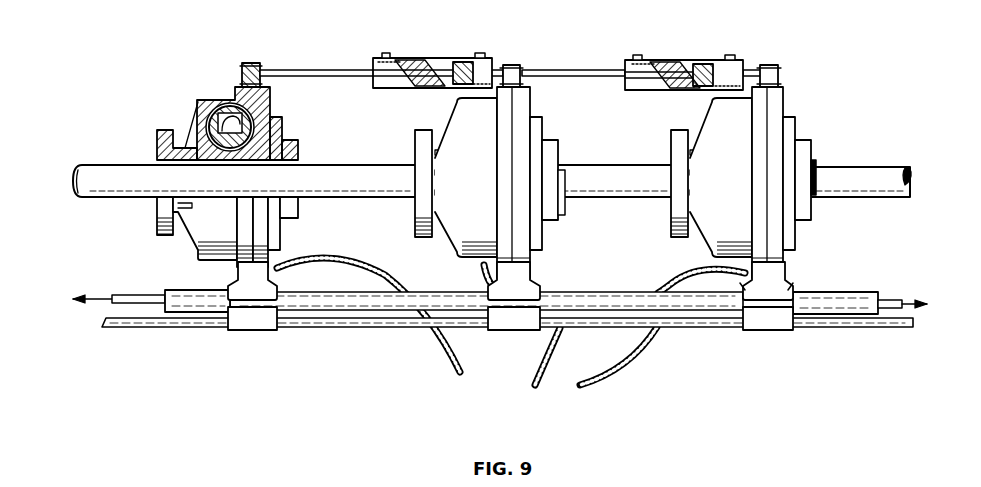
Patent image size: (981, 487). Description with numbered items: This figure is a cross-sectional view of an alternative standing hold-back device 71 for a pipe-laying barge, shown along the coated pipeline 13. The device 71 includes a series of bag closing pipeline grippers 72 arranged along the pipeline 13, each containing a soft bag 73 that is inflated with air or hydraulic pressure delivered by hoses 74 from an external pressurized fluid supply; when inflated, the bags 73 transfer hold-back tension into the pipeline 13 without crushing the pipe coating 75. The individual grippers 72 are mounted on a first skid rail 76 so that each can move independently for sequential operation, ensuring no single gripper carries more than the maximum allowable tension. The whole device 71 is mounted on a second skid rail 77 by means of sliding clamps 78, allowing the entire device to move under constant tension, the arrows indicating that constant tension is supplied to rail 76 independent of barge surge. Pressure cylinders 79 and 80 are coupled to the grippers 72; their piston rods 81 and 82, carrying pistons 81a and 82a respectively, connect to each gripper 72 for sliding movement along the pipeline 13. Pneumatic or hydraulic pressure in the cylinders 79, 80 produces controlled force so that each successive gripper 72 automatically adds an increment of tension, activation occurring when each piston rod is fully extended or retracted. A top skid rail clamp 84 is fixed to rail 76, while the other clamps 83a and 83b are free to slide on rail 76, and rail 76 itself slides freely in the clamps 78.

The coated pipeline 13 is at (103, 193).
The standing hold-back device 71 is at (790, 118).
The bag closing pipeline gripper 72 is at (535, 115).
The soft bag 73 is at (228, 113).
The hose 74 is at (440, 358).
The pipe coating 75 is at (135, 158).
The first skid rail 76 is at (813, 306).
The second skid rail 77 is at (713, 322).
The sliding clamp 78 is at (247, 313).
The pressure cylinder 79 is at (418, 60).
The pressure cylinder 80 is at (665, 62).
The piston rod 81 is at (301, 70).
The piston 81a is at (458, 62).
The piston rod 82 is at (590, 70).
The piston 82a is at (705, 64).
The skid rail clamp 83a is at (282, 303).
The skid rail clamp 83b is at (497, 292).
The top skid rail clamp 84 is at (780, 296).